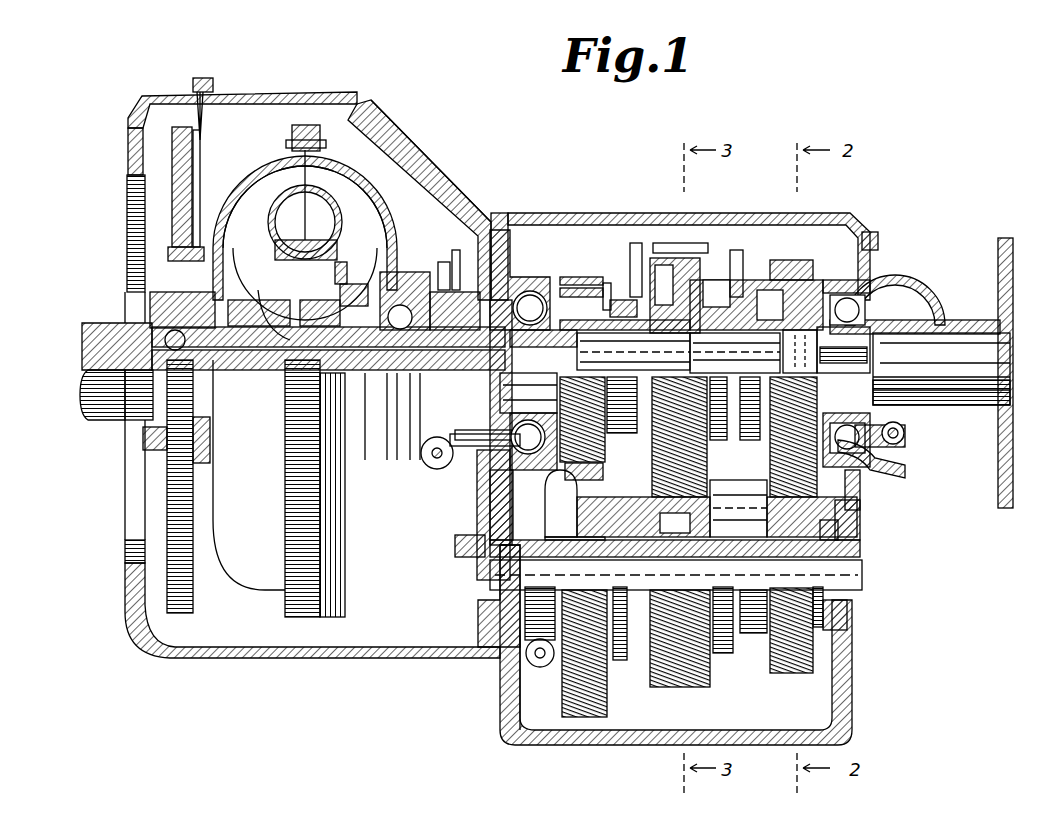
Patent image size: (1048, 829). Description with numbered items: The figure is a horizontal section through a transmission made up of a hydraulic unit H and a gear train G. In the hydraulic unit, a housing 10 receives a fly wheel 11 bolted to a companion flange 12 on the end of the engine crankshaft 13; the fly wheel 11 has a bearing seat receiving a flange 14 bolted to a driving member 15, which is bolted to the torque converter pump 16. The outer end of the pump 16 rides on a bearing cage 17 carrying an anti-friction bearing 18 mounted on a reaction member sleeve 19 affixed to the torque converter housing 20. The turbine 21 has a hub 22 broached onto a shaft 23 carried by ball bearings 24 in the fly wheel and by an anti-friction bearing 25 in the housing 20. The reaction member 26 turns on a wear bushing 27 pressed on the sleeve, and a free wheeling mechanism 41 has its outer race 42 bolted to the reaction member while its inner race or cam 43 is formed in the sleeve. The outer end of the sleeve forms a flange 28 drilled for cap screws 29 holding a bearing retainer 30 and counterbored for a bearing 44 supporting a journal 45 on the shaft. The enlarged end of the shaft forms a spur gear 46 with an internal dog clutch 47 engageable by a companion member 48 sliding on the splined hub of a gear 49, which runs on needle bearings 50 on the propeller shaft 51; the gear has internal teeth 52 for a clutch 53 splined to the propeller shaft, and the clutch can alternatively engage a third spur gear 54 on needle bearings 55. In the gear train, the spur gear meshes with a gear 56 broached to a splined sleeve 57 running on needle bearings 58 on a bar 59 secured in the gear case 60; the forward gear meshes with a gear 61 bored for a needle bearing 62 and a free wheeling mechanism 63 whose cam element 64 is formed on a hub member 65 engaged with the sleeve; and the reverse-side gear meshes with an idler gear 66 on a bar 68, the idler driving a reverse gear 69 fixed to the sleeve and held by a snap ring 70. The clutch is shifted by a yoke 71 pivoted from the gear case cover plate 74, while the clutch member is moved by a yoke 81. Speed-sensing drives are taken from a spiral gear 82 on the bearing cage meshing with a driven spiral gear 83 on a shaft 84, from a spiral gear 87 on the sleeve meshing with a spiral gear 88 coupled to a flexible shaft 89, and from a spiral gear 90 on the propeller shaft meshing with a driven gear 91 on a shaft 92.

The housing 10 is at (172, 98).
The fly wheel 11 is at (172, 152).
The companion flange 12 is at (170, 292).
The engine crankshaft 13 is at (100, 422).
The flange 14 is at (196, 233).
The driving member 15 is at (258, 162).
The torque converter pump 16 is at (393, 208).
The bearing cage 17 is at (412, 268).
The anti-friction bearing 18 is at (443, 272).
The reaction member sleeve 19 is at (295, 318).
The torque converter housing 20 is at (447, 182).
The turbine 21 is at (237, 228).
The hub 22 is at (245, 372).
The shaft 23 is at (263, 372).
The ball bearings 24 is at (122, 318).
The anti-friction bearing 25 is at (548, 290).
The reaction member 26 is at (325, 320).
The wear bushing 27 is at (309, 300).
The flange 28 is at (520, 277).
The cap screws 29 is at (465, 462).
The bearing retainer 30 is at (548, 455).
The free wheeling mechanism 41 is at (340, 290).
The outer race 42 is at (349, 305).
The inner race or cam 43 is at (336, 392).
The bearing 44 is at (478, 483).
The journal 45 is at (458, 497).
The spur gear 46 is at (587, 276).
The internal dog clutch 47 is at (613, 298).
The companion member 48 is at (618, 283).
The gear 49 is at (680, 243).
The needle bearings 50 is at (656, 300).
The propeller shaft 51 is at (940, 323).
The internal teeth 52 is at (708, 277).
The clutch 53 is at (718, 296).
The third spur gear 54 is at (768, 282).
The needle bearings 55 is at (817, 283).
The gear 56 is at (607, 702).
The splined sleeve 57 is at (855, 560).
The needle bearings 58 is at (544, 533).
The bar 59 is at (863, 577).
The gear case 60 is at (850, 695).
The gear 61 is at (705, 688).
The needle bearing 62 is at (650, 492).
The free wheeling mechanism 63 is at (608, 500).
The cam element 64 is at (712, 472).
The hub member 65 is at (650, 478).
The idler gear 66 is at (765, 478).
The bar 68 is at (860, 530).
The reverse gear 69 is at (795, 675).
The snap ring 70 is at (855, 547).
The yoke 71 is at (741, 290).
The gear case cover plate 74 is at (823, 217).
The yoke 81 is at (642, 243).
The spiral gear 82 is at (430, 302).
The driven spiral gear 83 is at (432, 462).
The shaft 84 is at (450, 462).
The spiral gear 87 is at (500, 665).
The spiral gear 88 is at (545, 667).
The flexible shaft 89 is at (520, 655).
The spiral gear 90 is at (893, 317).
The driven gear 91 is at (927, 447).
The shaft 92 is at (897, 463).
The gear train G is at (590, 212).
The hydraulic unit H is at (412, 150).